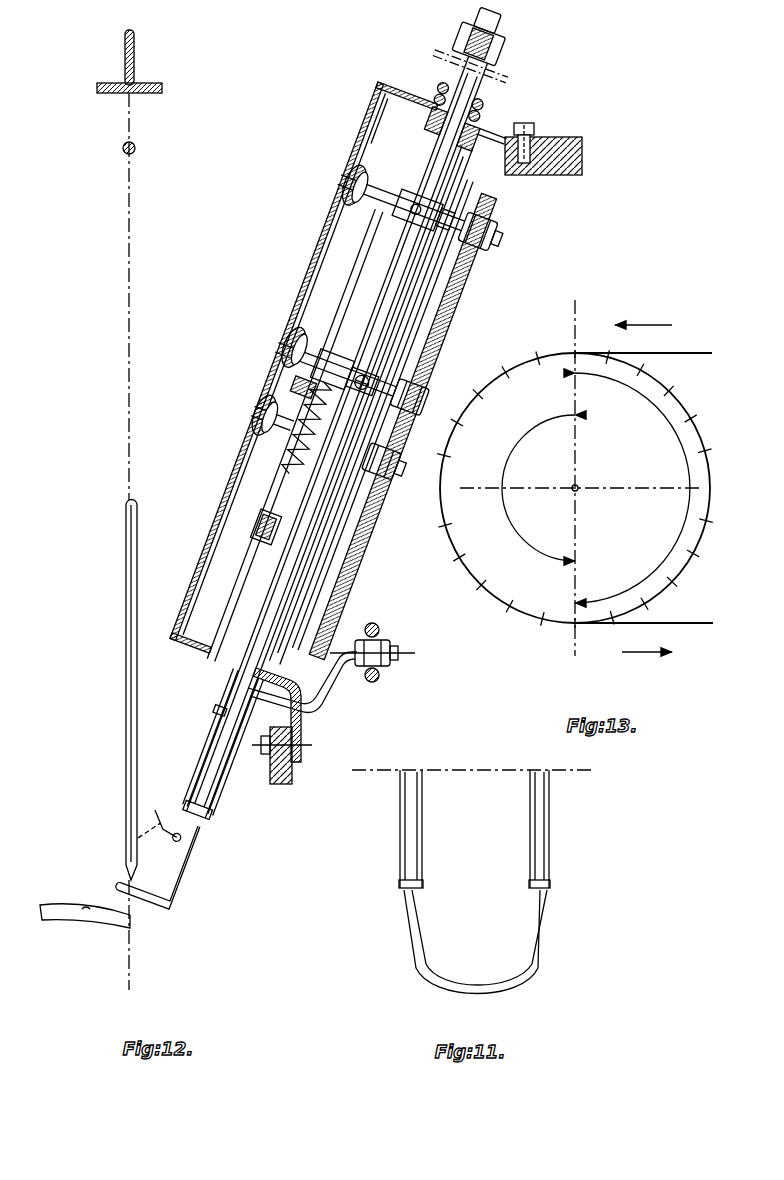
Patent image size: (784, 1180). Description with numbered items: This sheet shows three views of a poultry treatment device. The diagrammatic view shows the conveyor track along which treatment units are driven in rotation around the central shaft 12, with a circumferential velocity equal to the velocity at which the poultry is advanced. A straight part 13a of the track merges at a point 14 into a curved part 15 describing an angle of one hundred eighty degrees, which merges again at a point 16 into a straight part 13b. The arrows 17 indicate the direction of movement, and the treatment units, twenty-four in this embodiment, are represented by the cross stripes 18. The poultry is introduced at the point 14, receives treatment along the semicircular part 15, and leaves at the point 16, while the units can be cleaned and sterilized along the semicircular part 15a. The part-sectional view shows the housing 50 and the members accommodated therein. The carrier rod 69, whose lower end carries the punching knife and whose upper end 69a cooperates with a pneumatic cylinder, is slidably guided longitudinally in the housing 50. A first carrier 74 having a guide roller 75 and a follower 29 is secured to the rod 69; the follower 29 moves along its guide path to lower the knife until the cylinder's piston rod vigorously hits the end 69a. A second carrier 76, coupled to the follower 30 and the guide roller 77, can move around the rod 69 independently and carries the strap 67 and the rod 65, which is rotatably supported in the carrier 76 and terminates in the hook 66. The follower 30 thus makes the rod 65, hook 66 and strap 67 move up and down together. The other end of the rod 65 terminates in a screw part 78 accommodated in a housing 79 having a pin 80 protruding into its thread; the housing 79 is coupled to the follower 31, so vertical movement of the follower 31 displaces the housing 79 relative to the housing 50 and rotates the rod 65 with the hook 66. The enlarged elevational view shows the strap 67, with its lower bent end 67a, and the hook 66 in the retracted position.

In FIG. 13, the central shaft 12 is at (579, 491).
In FIG. 13, the straight part of the track 13a is at (694, 352).
In FIG. 13, the straight part of the track 13b is at (693, 626).
In FIG. 13, the point 14 is at (577, 352).
In FIG. 13, the curved part of the track 15 is at (470, 575).
In FIG. 13, the semicircular part of the track 15a is at (689, 571).
In FIG. 13, the point 16 is at (574, 630).
In FIG. 13, the arrows 17 is at (650, 323).
In FIG. 13, the cross stripes 18 is at (547, 350).
In FIG. 12, the follower 29 is at (500, 238).
In FIG. 12, the follower 30 is at (404, 386).
In FIG. 12, the follower 31 is at (389, 482).
In FIG. 12, the housing 50 is at (316, 243).
In FIG. 12, the rod 65 is at (250, 572).
In FIG. 12, the hook 66 is at (178, 850).
In FIG. 12, the strap 67 is at (218, 772).
In FIG. 11, the strap 67 is at (545, 812).
In FIG. 12, the bent end of U-shaped rod 67a is at (153, 817).
In FIG. 11, the bent end of U-shaped rod 67a is at (545, 955).
In FIG. 12, the carrier rod 69 is at (273, 592).
In FIG. 12, the end of the carrier rod 69a is at (472, 93).
In FIG. 12, the first carrier 74 is at (410, 205).
In FIG. 12, the guide roller 75 is at (344, 190).
In FIG. 12, the second carrier 76 is at (355, 342).
In FIG. 12, the guide roller 77 is at (300, 335).
In FIG. 12, the screw part 78 is at (290, 456).
In FIG. 12, the housing 79 is at (292, 372).
In FIG. 12, the pin 80 is at (297, 392).